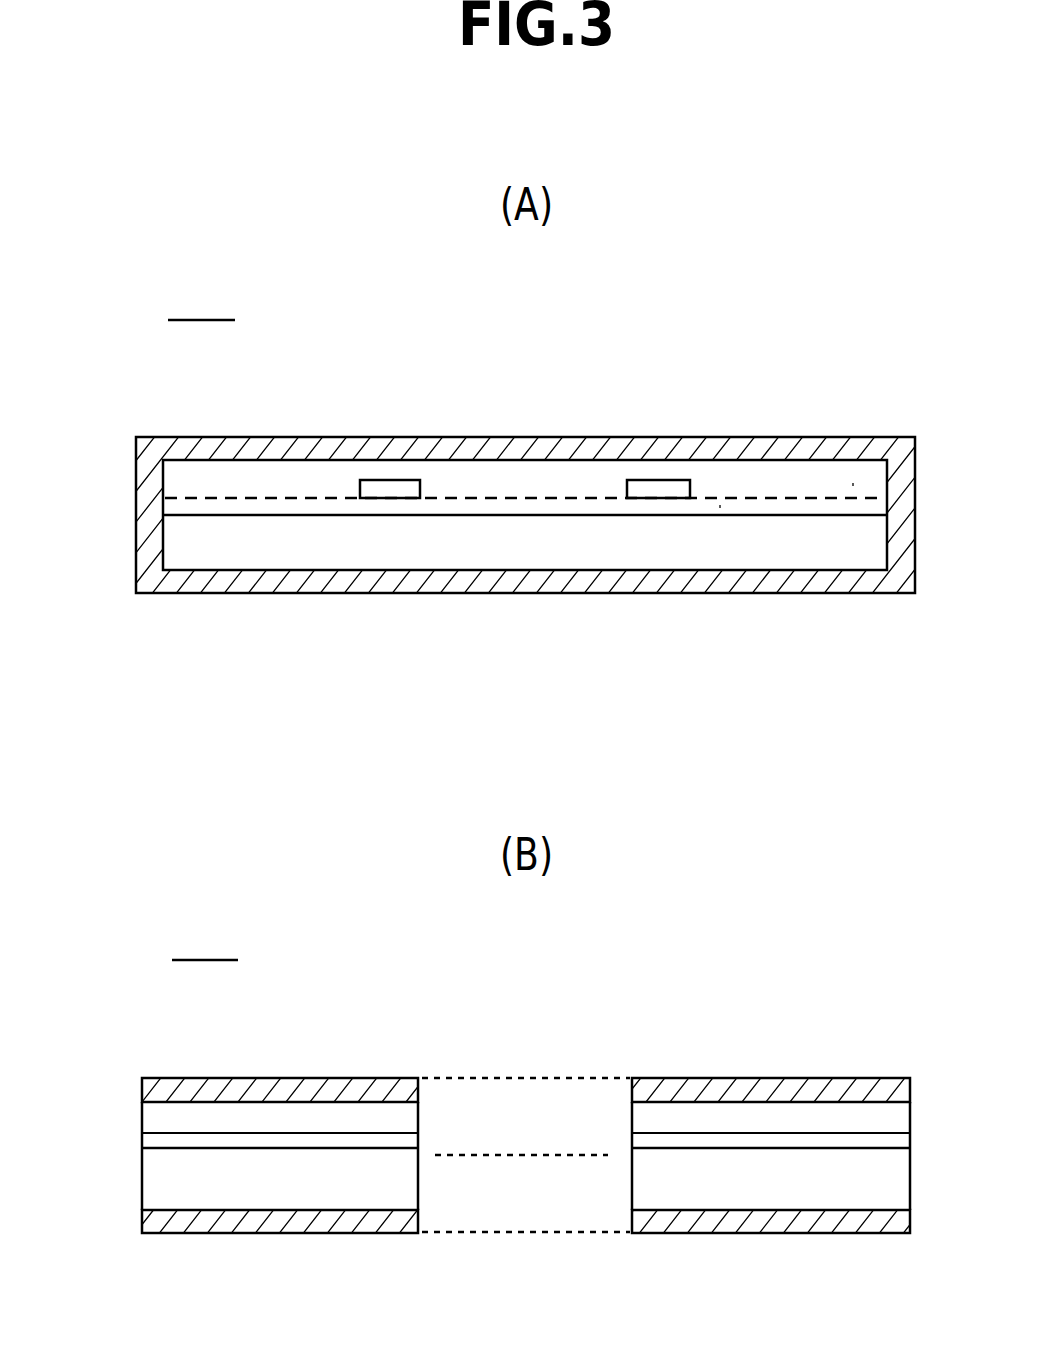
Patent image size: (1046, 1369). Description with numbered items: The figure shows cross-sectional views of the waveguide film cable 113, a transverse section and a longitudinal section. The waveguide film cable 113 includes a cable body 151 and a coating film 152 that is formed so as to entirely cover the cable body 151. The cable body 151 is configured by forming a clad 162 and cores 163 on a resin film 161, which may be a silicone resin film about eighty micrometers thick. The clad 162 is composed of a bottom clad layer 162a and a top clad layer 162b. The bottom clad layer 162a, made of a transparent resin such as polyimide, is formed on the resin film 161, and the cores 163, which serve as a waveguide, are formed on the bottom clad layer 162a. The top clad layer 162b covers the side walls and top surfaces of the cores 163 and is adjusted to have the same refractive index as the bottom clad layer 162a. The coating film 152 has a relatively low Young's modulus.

The waveguide film cable 113 is at (203, 619).
The cable body 151 is at (232, 590).
The coating film 152 is at (795, 430).
The resin film 161 is at (484, 545).
The clad 162 is at (526, 808).
The bottom clad layer 162a is at (720, 508).
The top clad layer 162b is at (853, 483).
The cores 163 is at (386, 480).